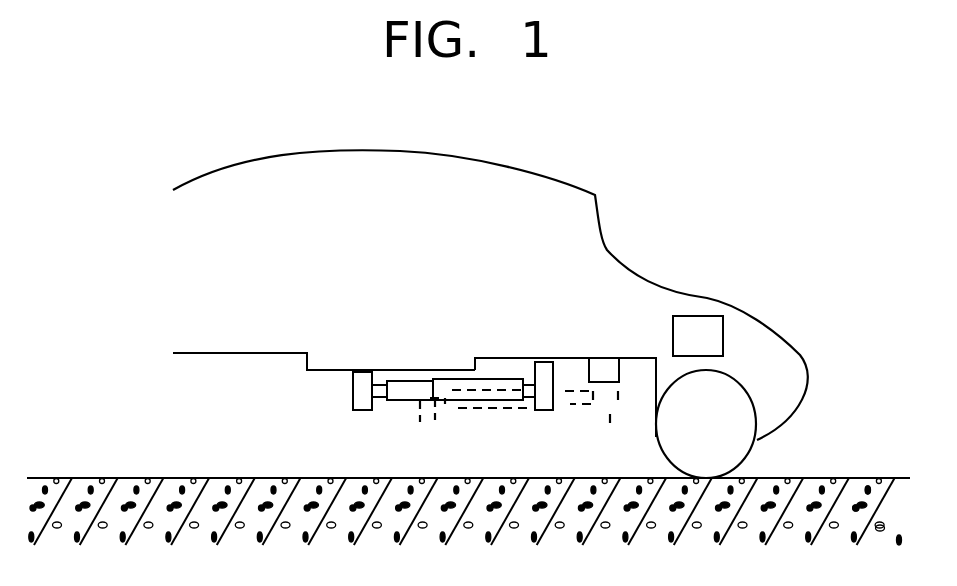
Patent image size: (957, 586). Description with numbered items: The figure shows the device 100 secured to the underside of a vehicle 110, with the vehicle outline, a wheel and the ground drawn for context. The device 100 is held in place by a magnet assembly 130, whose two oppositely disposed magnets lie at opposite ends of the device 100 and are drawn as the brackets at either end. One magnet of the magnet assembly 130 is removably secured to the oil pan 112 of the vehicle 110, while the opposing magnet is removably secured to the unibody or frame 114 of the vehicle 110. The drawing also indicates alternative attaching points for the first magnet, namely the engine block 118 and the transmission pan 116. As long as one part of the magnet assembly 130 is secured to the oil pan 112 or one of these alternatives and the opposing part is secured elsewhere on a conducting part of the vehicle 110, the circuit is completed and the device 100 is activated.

The device 100 is at (337, 394).
The vehicle 110 is at (420, 147).
The oil pan 112 is at (349, 361).
The unibody or frame 114 is at (549, 354).
The transmission pan 116 is at (689, 327).
The engine block 118 is at (601, 371).
The magnet assembly 130 is at (369, 413).